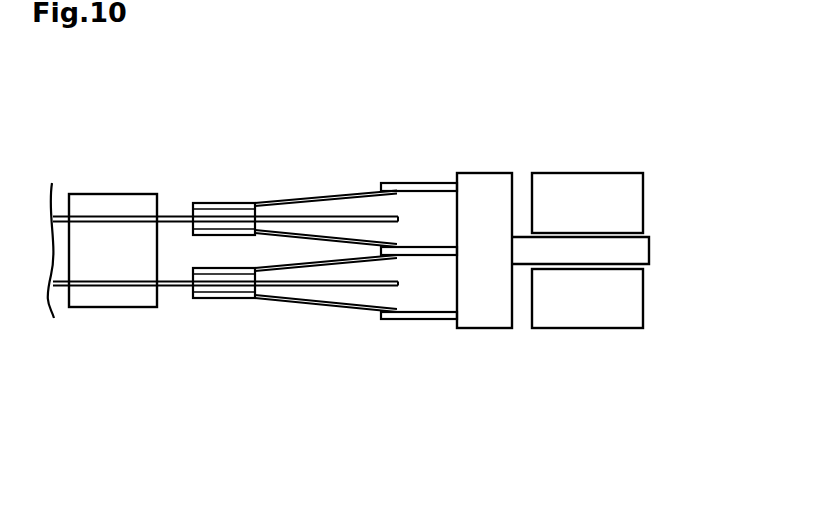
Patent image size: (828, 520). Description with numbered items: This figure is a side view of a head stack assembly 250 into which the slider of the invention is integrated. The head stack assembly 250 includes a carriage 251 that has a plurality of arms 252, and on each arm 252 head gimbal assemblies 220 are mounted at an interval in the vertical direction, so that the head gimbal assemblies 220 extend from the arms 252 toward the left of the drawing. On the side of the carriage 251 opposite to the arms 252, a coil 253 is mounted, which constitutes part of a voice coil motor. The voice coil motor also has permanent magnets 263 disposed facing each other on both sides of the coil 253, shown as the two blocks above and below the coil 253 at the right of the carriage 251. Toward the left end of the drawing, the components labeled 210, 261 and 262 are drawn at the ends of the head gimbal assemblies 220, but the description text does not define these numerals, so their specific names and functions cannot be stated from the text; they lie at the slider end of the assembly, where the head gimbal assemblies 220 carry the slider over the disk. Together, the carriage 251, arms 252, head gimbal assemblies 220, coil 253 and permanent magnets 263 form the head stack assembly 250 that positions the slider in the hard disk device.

The connection terminal block 210 is at (190, 203).
The head gimbal assembly 220 is at (311, 197).
The head stack assembly 250 is at (552, 248).
The carriage 251 is at (483, 310).
The arm 252 is at (396, 182).
The coil 253 is at (637, 254).
The sensor element 261 is at (93, 200).
The lead wire 262 is at (167, 214).
The permanent magnet 263 is at (581, 173).